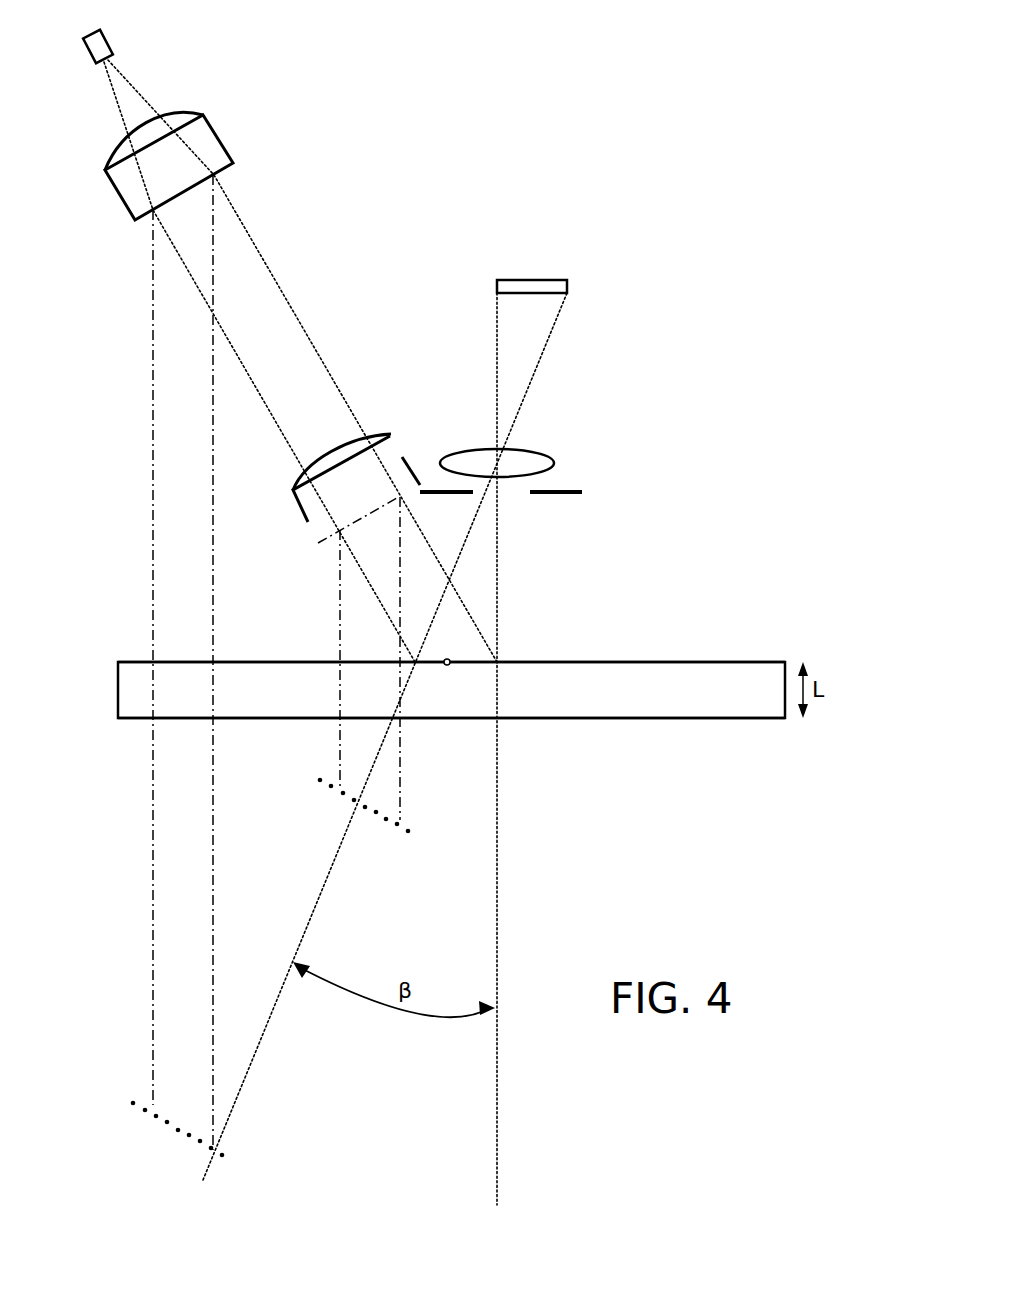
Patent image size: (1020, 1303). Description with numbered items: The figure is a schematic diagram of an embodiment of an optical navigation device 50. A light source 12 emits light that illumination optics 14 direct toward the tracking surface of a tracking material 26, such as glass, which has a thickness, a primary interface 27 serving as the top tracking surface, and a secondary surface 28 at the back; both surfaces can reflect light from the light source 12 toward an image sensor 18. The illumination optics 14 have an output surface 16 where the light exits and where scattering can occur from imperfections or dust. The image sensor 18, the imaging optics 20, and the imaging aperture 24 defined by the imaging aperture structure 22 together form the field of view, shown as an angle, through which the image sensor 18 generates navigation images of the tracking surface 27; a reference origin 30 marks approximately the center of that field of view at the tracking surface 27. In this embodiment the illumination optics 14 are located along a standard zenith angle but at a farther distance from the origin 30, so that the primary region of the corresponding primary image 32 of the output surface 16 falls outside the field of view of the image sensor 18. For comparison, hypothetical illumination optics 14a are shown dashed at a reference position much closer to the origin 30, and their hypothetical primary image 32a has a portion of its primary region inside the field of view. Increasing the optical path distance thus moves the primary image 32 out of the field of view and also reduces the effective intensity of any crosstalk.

The light source 12 is at (92, 60).
The illumination optics 14 is at (108, 163).
The hypothetical illumination optics 14a is at (293, 488).
The output surface 16 is at (165, 212).
The image sensor 18 is at (568, 287).
The imaging optics 20 is at (543, 453).
The imaging aperture structure 22 is at (578, 490).
The imaging aperture 24 is at (519, 500).
The tracking material 26 is at (567, 683).
The primary interface 27 is at (652, 648).
The secondary surface 28 is at (710, 703).
The reference origin 30 is at (450, 659).
The primary image 32 is at (180, 1130).
The hypothetical primary image 32a is at (343, 796).
The optical navigation device 50 is at (484, 139).